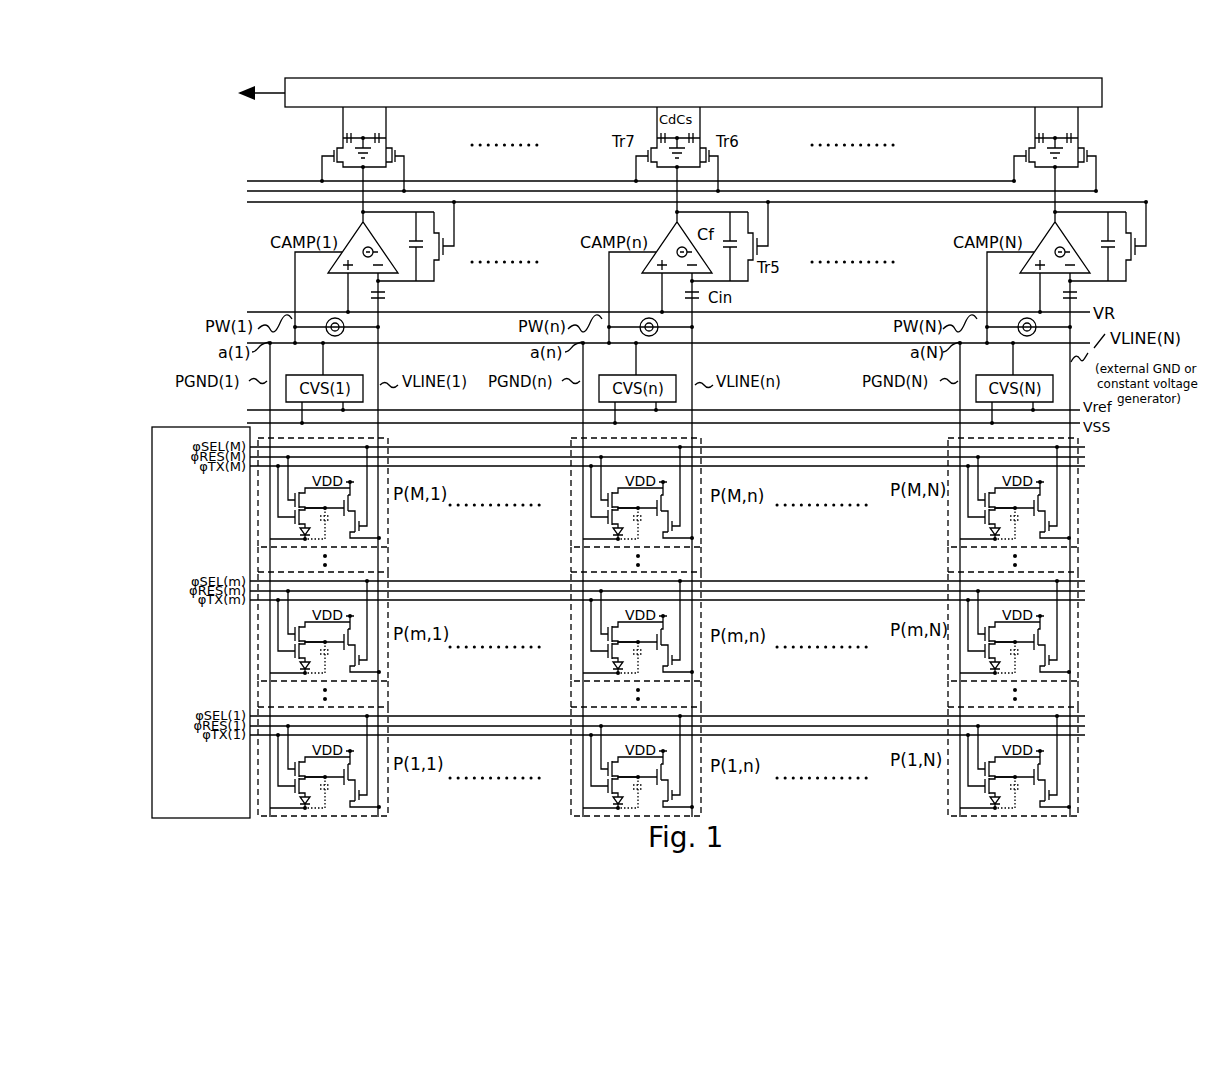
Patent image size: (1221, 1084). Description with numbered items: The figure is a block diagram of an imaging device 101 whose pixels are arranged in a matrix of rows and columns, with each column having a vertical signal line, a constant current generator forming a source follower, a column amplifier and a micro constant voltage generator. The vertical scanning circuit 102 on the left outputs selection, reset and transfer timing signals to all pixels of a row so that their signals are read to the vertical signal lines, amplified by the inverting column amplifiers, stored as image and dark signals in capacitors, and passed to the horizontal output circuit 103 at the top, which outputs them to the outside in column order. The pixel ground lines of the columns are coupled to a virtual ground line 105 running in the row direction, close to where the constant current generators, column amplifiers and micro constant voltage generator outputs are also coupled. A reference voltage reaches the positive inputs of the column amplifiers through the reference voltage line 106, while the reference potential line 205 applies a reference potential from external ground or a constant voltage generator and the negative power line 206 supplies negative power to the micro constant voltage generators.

The imaging device 101 is at (1138, 137).
The vertical scanning circuit 102 is at (215, 428).
The horizontal output circuit 103 is at (738, 76).
The virtual ground line 105 is at (778, 343).
The reference voltage line 106 is at (816, 312).
The Vref line 205 is at (788, 408).
The VSS line 206 is at (790, 425).